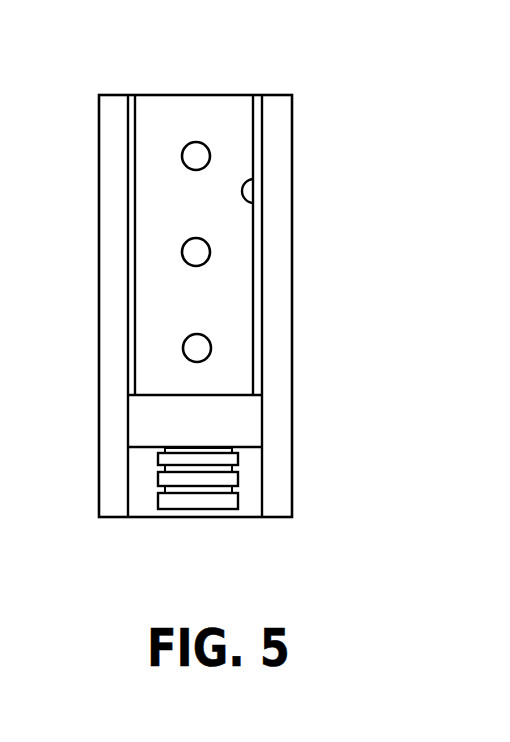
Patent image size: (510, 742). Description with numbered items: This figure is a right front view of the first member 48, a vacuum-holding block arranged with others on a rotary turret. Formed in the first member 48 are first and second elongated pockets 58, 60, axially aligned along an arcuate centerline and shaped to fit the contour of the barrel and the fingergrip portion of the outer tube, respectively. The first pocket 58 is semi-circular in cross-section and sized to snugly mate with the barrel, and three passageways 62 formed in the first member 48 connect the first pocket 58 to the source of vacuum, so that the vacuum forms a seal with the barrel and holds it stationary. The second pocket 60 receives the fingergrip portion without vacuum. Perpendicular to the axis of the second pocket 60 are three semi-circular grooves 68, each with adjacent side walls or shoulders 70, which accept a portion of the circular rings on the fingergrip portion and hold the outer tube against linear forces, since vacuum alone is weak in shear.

The first member 48 is at (232, 95).
The first elongated pocket 58 is at (252, 205).
The second elongated pocket 60 is at (188, 502).
The passageways 62 is at (184, 170).
The semi-circular grooves 68 is at (238, 462).
The side walls or shoulders 70 is at (160, 469).